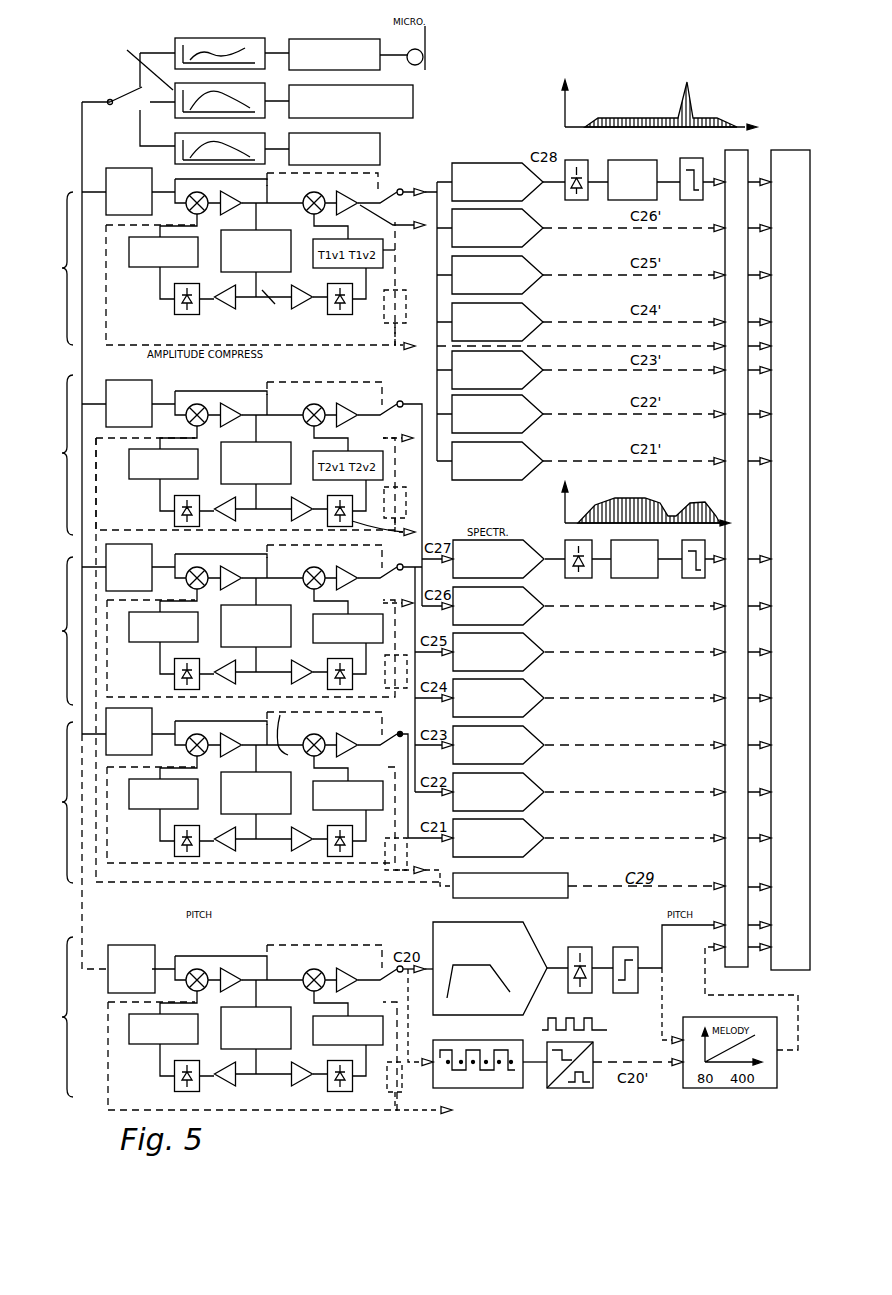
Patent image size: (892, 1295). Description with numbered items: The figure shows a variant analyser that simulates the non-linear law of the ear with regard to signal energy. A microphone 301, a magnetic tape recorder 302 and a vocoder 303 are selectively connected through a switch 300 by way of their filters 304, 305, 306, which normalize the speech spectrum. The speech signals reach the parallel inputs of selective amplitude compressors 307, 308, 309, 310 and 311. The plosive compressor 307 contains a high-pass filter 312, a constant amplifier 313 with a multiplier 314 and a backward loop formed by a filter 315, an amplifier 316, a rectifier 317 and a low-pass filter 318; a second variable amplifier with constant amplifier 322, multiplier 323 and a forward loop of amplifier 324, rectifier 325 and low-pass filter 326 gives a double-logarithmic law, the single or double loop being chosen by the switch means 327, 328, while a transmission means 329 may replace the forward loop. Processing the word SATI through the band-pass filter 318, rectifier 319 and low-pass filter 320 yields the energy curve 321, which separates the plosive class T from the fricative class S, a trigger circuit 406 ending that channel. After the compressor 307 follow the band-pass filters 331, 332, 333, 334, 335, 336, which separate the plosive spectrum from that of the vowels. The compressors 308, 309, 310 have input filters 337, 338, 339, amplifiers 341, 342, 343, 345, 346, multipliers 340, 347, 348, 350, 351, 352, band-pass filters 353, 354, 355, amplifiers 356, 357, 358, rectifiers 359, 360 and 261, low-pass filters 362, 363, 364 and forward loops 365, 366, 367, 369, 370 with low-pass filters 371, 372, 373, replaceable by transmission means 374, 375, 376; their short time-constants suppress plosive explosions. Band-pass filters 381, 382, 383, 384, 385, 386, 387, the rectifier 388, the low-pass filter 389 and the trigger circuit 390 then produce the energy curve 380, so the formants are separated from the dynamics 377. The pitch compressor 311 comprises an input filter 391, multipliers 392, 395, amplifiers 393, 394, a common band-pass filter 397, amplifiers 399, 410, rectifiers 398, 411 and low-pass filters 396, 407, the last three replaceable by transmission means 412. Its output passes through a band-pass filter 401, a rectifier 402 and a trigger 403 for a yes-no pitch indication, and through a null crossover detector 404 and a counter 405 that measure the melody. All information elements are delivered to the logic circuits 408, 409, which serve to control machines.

The rectifier 261 is at (174, 849).
The switch 300 is at (108, 88).
The microphone 301 is at (326, 42).
The magnetic tape recorder 302 is at (413, 99).
The vocoder 303 is at (380, 152).
The filter 304 is at (200, 40).
The filter 305 is at (131, 64).
The filter 306 is at (140, 146).
The selective amplitude compressor 307 is at (47, 268).
The selective amplitude compressor 308 is at (47, 455).
The selective amplitude compressor 309 is at (47, 631).
The selective amplitude compressor 310 is at (47, 802).
The selective amplitude compressor 311 is at (51, 1017).
The filter 312 is at (129, 191).
The constant amplifier 313 is at (225, 196).
The modulator 314 is at (190, 212).
The filter 315 is at (256, 251).
The amplifier 316 is at (225, 309).
The rectifier 317 is at (174, 312).
The low-pass filter 318 is at (143, 268).
The rectifier 319 is at (575, 163).
The low-pass filter 320 is at (624, 165).
The curve 321 is at (720, 121).
The constant amplifier 322 is at (381, 210).
The multiplier 323 is at (305, 211).
The amplifier 324 is at (302, 310).
The rectifier 325 is at (335, 315).
The low-pass filter 326 is at (133, 356).
The switch means 327 is at (264, 307).
The switch means 328 is at (392, 190).
The transmission means 329 is at (400, 310).
The band-pass filter 331 is at (532, 458).
The band-pass filter 332 is at (532, 411).
The band-pass filter 333 is at (535, 367).
The band-pass filter 334 is at (530, 319).
The band-pass filter 335 is at (530, 272).
The band-pass filter 336 is at (536, 228).
The input filter 337 is at (129, 403).
The input filter 338 is at (129, 568).
The input filter 339 is at (129, 732).
The modulator 340 is at (200, 566).
The amplifier 341 is at (232, 403).
The amplifier 342 is at (345, 408).
The amplifier 343 is at (240, 560).
The amplifier 345 is at (215, 740).
The amplifier 346 is at (355, 738).
The multiplier 347 is at (200, 403).
The multiplier 348 is at (313, 403).
The multiplier 350 is at (320, 567).
The multiplier 351 is at (200, 734).
The multiplier 352 is at (320, 733).
The band-pass filter 353 is at (256, 463).
The band-pass filter 354 is at (256, 626).
The band-pass filter 355 is at (256, 793).
The amplifier 356 is at (228, 520).
The amplifier 357 is at (228, 680).
The amplifier 358 is at (228, 850).
The rectifier 359 is at (174, 518).
The rectifier 360 is at (174, 685).
The low-pass filter 362 is at (129, 470).
The low-pass filter 363 is at (142, 642).
The low-pass filter 364 is at (142, 809).
The forward loop element 365 is at (298, 497).
The forward loop element 366 is at (300, 660).
The forward loop element 367 is at (296, 855).
The forward loop element 369 is at (280, 744).
The forward loop element 370 is at (340, 857).
The low-pass filter 371 is at (402, 503).
The low-pass filter 372 is at (348, 628).
The low-pass filter 373 is at (348, 795).
The transmission means 374 is at (403, 503).
The transmission means 375 is at (385, 680).
The transmission means 376 is at (395, 870).
The dynamics 377 is at (565, 893).
The energy curve 380 is at (590, 510).
The band-pass filter 381 is at (537, 845).
The band-pass filter 382 is at (532, 799).
The band-pass filter 383 is at (532, 752).
The band-pass filter 384 is at (532, 705).
The band-pass filter 385 is at (532, 659).
The band-pass filter 386 is at (532, 613).
The band-pass filter 387 is at (530, 572).
The rectifier 388 is at (584, 578).
The low-pass filter 389 is at (638, 575).
The trigger circuit 390 is at (705, 572).
The input filter 391 is at (122, 952).
The multiplier 392 is at (197, 968).
The amplifier 393 is at (236, 968).
The amplifier 394 is at (357, 973).
The multiplier 395 is at (314, 968).
The low-pass filter 396 is at (142, 1044).
The band-pass filter 397 is at (256, 1028).
The rectifier 398 is at (176, 1090).
The amplifier 399 is at (230, 1086).
The band-pass filter 401 is at (523, 948).
The rectifier 402 is at (583, 993).
The trigger 403 is at (620, 950).
The null crossover detector 404 is at (487, 1088).
The counter 405 is at (565, 1088).
The trigger circuit 406 is at (684, 163).
The low-pass filter 407 is at (348, 1030).
The logic circuit 408 is at (738, 967).
The logic circuit 409 is at (785, 970).
The amplifier 410 is at (300, 1090).
The rectifier 411 is at (340, 1092).
The transmission means 412 is at (400, 1100).